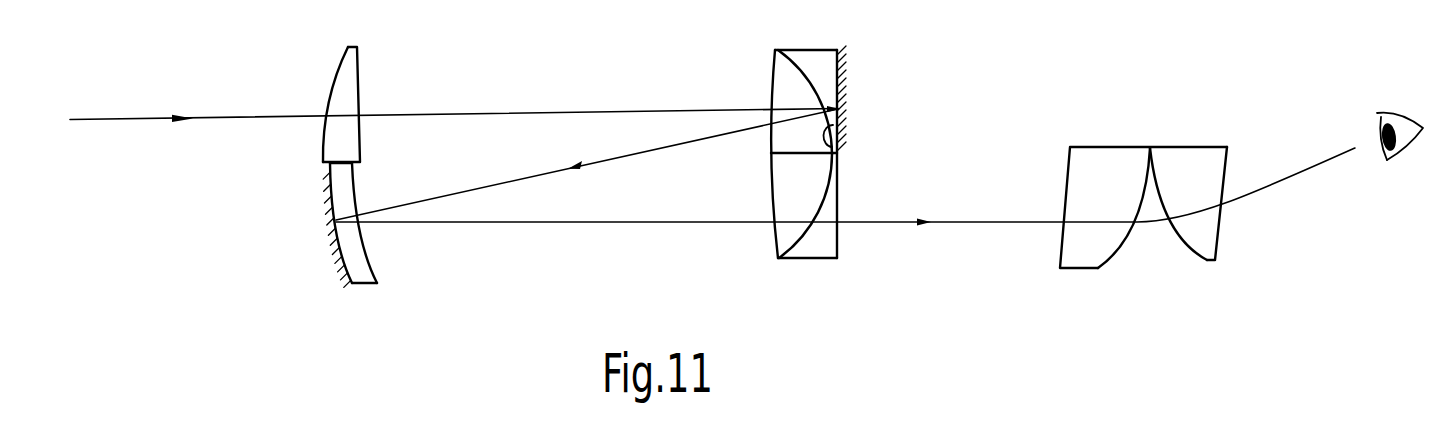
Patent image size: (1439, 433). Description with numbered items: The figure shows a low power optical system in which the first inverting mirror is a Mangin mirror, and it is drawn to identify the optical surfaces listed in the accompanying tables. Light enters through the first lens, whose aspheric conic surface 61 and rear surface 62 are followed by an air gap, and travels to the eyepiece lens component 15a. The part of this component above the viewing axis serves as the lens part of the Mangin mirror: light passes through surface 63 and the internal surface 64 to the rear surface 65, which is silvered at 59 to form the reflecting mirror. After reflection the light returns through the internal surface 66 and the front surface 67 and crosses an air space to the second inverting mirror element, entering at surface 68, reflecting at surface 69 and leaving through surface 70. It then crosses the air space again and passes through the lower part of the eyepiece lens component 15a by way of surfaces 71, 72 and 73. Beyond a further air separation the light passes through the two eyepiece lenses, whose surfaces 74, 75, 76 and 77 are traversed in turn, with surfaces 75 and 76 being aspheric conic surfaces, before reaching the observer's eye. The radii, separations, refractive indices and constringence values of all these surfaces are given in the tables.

The eyepiece lens component 15a is at (813, 170).
The silvered surface 59 is at (855, 125).
The surface 61 is at (332, 87).
The surface 62 is at (360, 86).
The surface 63 is at (772, 76).
The surface 64 is at (803, 73).
The surface 65 is at (846, 75).
The surface 66 is at (832, 147).
The surface 67 is at (769, 143).
The surface 68 is at (353, 190).
The surface 69 is at (328, 201).
The surface 70 is at (349, 224).
The surface 71 is at (770, 194).
The surface 72 is at (827, 192).
The surface 73 is at (845, 207).
The surface 74 is at (1070, 185).
The surface 75 is at (1145, 183).
The surface 76 is at (1156, 186).
The surface 77 is at (1227, 183).